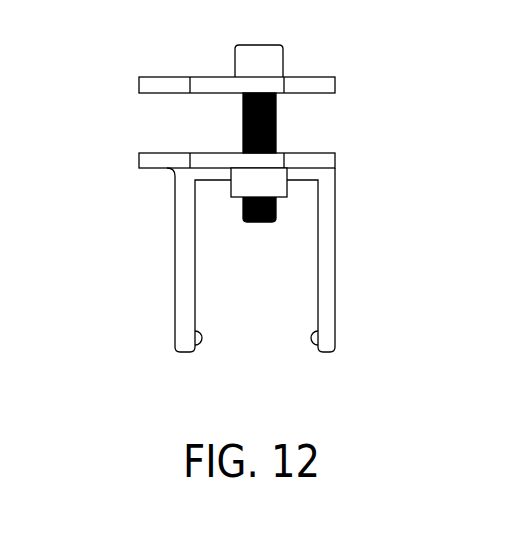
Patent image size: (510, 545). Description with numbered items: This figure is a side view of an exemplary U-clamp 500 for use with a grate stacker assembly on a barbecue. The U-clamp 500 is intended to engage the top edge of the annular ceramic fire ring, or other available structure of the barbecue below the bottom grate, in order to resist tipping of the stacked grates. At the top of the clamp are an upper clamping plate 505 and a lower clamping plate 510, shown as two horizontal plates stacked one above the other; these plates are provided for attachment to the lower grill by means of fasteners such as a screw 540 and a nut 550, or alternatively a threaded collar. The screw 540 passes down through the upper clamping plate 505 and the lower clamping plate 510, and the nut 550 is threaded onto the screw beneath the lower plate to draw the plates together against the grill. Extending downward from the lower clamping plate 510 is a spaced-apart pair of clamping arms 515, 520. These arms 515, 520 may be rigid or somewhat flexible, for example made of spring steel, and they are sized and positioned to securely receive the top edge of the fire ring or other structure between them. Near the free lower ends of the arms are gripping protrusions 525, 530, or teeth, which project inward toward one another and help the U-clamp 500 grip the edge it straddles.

The U-clamp 500 is at (253, 286).
The upper clamping plate 505 is at (143, 79).
The lower clamping plate 510 is at (153, 162).
The clamping arm 515 is at (183, 299).
The clamping arm 520 is at (328, 283).
The gripping protrusion 525 is at (203, 338).
The gripping protrusion 530 is at (310, 342).
The screw 540 is at (272, 62).
The nut 550 is at (273, 185).